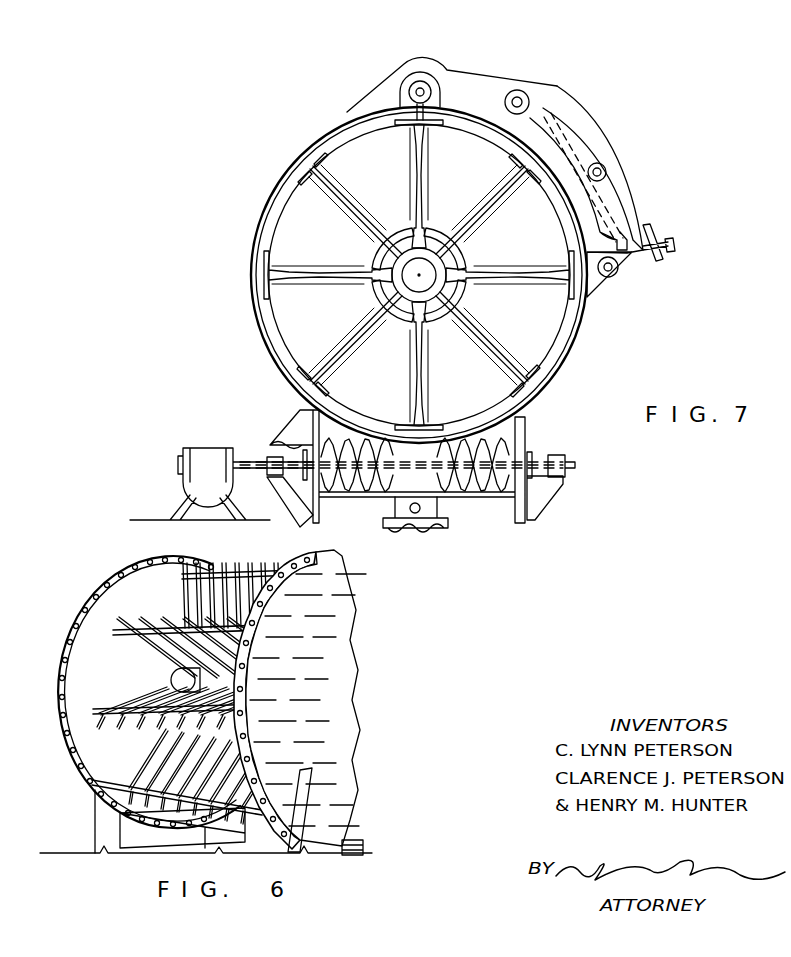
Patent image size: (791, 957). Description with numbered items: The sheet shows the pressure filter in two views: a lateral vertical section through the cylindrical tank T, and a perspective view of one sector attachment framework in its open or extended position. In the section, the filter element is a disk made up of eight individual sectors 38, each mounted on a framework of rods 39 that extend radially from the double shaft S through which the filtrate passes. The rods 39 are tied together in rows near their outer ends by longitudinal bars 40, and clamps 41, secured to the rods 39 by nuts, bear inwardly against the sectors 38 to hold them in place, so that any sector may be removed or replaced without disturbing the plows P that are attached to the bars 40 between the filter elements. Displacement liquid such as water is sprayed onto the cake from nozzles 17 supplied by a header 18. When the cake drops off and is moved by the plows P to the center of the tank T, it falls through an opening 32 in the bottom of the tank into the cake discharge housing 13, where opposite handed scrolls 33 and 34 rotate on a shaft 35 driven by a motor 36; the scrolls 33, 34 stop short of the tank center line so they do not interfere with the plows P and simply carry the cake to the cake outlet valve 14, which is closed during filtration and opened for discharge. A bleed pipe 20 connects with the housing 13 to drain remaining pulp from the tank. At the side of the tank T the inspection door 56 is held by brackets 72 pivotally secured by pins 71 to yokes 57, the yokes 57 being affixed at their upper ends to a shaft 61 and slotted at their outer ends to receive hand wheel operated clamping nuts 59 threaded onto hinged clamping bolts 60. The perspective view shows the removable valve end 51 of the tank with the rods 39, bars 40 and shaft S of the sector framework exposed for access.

In FIG. 7, the cake discharge housing 13 is at (478, 497).
In FIG. 7, the cake outlet valve 14 is at (440, 535).
In FIG. 7, the nozzles 17 is at (433, 98).
In FIG. 7, the header 18 is at (432, 78).
In FIG. 7, the bleed pipe 20 is at (395, 507).
In FIG. 7, the opening 32 is at (348, 400).
In FIG. 7, the scroll 33 is at (345, 478).
In FIG. 7, the scroll 34 is at (480, 458).
In FIG. 7, the shaft 35 is at (255, 462).
In FIG. 7, the motor 36 is at (184, 487).
In FIG. 7, the sectors 38 is at (475, 180).
In FIG. 7, the rods 39 is at (340, 182).
In FIG. 6, the rods 39 is at (187, 600).
In FIG. 6, the longitudinal bars 40 is at (182, 576).
In FIG. 7, the clamps 41 is at (563, 366).
In FIG. 6, the valve end 51 is at (78, 615).
In FIG. 7, the inspection door 56 is at (598, 215).
In FIG. 7, the yokes 57 is at (560, 99).
In FIG. 7, the clamping nuts 59 is at (664, 250).
In FIG. 7, the clamping bolts 60 is at (612, 277).
In FIG. 7, the shaft 61 is at (520, 98).
In FIG. 7, the pins 71 is at (606, 172).
In FIG. 7, the brackets 72 is at (585, 150).
In FIG. 7, the plows P is at (272, 330).
In FIG. 7, the shaft S is at (447, 259).
In FIG. 6, the shaft S is at (240, 690).
In FIG. 6, the tank T is at (325, 640).